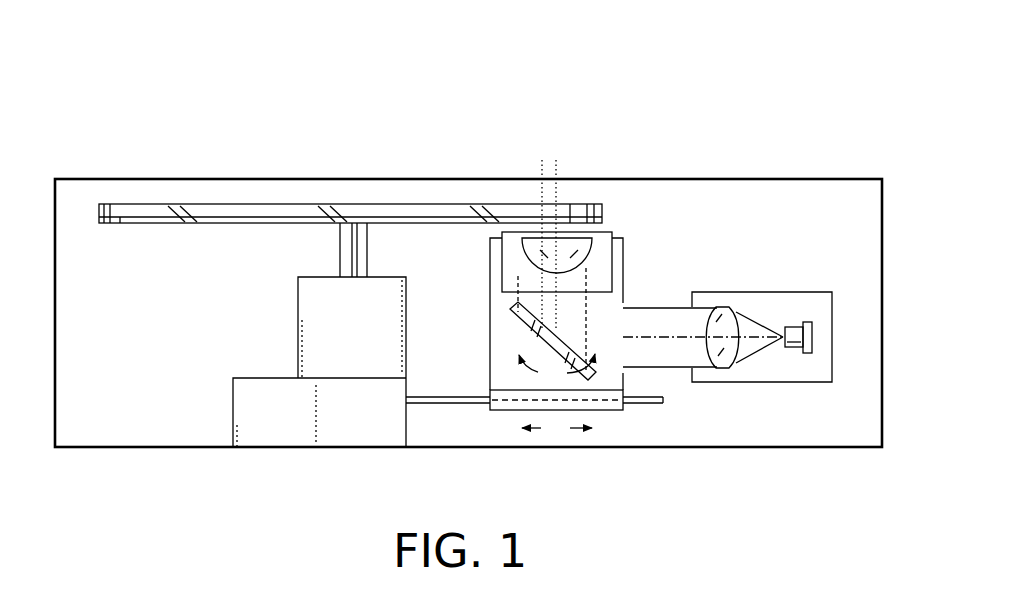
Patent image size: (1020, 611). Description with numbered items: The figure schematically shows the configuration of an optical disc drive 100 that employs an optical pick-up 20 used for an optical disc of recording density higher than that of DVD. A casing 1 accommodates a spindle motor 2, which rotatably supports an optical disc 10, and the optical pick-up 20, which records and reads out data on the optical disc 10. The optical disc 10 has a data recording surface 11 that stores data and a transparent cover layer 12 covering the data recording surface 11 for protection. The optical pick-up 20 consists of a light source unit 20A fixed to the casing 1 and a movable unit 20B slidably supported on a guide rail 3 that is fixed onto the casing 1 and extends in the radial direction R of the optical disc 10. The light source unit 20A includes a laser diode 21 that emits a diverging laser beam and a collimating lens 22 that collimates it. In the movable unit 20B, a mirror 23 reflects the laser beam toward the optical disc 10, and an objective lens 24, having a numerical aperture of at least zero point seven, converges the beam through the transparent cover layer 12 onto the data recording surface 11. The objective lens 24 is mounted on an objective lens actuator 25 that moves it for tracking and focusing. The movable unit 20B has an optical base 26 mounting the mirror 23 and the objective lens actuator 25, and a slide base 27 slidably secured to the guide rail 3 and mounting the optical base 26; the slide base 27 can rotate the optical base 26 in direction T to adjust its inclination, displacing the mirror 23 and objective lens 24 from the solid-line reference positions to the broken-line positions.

The optical disc drive 100 is at (601, 74).
The casing 1 is at (218, 179).
The optical disc 10 is at (350, 157).
The data recording surface 11 is at (400, 228).
The transparent cover layer 12 is at (457, 228).
The spindle motor 2 is at (325, 331).
The guide rail 3 is at (443, 403).
The optical pick-up 20 is at (635, 312).
The light source unit 20A is at (762, 326).
The movable unit 20B is at (627, 423).
The laser diode 21 is at (803, 353).
The collimating lens 22 is at (747, 358).
The mirror 23 is at (513, 313).
The objective lens 24 is at (565, 250).
The objective lens actuator 25 is at (623, 284).
The optical base 26 is at (500, 370).
The slide base 27 is at (513, 403).